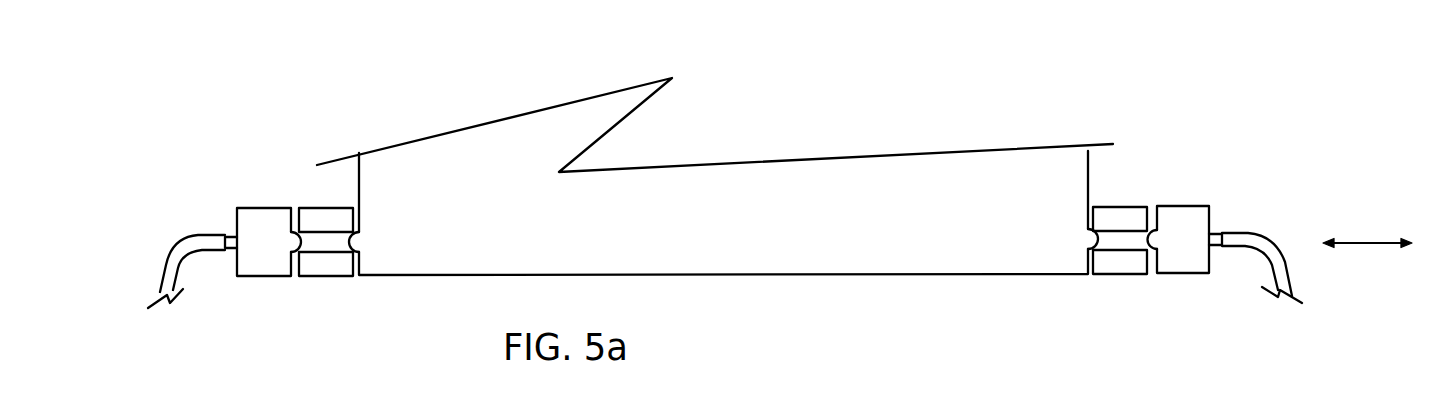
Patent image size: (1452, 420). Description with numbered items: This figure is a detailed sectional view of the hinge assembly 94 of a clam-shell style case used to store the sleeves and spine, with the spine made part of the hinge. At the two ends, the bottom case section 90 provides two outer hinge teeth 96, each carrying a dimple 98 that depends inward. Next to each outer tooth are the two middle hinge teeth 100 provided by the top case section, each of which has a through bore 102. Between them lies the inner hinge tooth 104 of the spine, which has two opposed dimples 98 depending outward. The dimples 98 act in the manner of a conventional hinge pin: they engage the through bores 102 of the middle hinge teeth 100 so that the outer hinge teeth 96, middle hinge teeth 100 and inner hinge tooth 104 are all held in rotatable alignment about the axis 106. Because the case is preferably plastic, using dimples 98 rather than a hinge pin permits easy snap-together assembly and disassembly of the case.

The bottom case section 90 is at (190, 236).
The hinge assembly 94 is at (793, 330).
The outer hinge teeth 96 is at (250, 220).
The dimple 98 is at (362, 240).
The middle hinge teeth 100 is at (328, 263).
The through bore 102 is at (323, 243).
The inner hinge tooth 104 is at (793, 240).
The axis 106 is at (1365, 244).